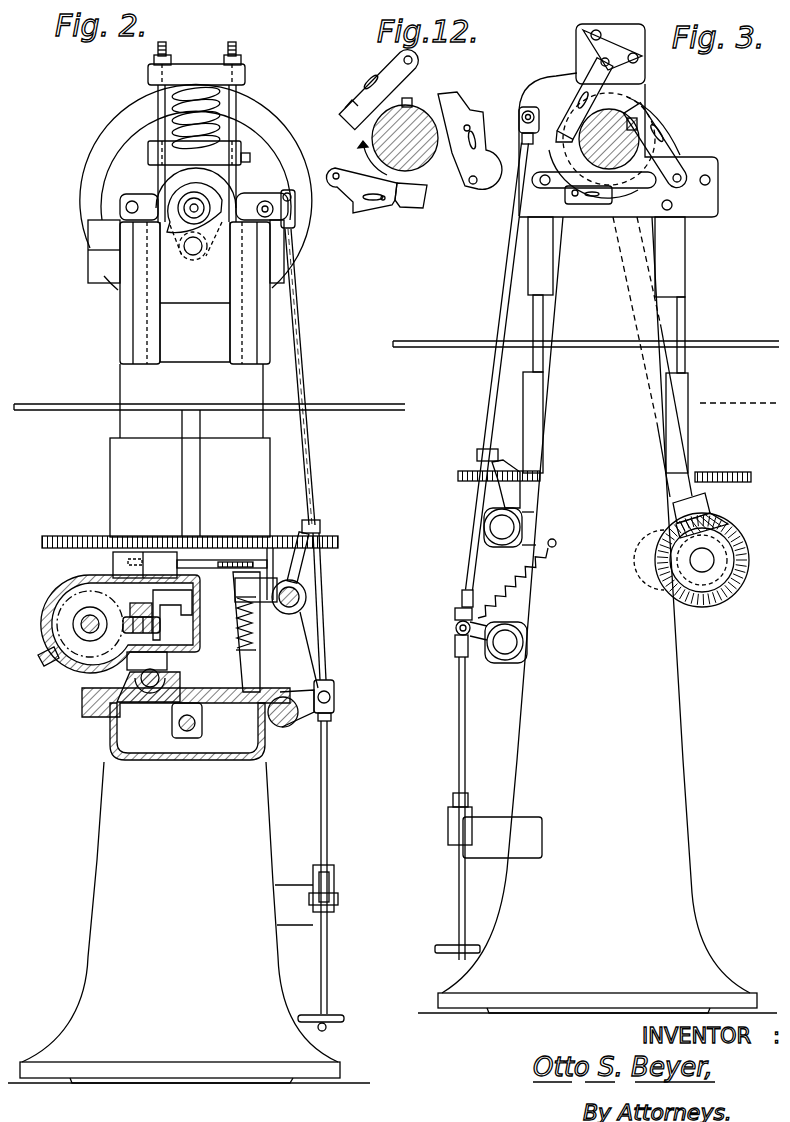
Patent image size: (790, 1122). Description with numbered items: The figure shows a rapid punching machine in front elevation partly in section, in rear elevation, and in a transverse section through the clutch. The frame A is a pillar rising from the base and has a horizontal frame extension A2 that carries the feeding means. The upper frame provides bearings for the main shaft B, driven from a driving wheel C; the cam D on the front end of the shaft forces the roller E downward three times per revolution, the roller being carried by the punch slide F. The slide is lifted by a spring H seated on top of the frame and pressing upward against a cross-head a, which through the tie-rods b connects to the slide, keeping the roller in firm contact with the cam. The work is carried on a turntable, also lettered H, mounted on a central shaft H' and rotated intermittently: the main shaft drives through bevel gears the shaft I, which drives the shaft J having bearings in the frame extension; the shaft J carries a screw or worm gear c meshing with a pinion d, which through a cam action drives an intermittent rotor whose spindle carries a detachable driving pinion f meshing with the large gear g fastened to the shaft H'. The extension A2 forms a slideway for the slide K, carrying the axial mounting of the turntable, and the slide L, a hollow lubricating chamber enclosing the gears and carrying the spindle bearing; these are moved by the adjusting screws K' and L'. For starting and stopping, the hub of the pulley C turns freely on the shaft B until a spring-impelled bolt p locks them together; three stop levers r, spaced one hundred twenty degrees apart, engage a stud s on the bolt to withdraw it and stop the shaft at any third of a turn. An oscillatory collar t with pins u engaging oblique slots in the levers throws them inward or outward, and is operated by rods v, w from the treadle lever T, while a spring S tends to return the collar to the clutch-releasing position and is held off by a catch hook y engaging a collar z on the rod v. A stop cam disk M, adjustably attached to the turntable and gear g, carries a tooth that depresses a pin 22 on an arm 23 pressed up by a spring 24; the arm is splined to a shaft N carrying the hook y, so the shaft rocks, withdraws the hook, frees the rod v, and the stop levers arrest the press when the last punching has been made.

In FIG. 2, the cross-head a is at (252, 70).
In FIG. 2, the tie-rods b is at (226, 48).
In FIG. 2, the driving wheel C is at (252, 118).
In FIG. 2, the spring and work carrier turntable H is at (209, 248).
In FIG. 3, the spring and work carrier turntable H is at (586, 332).
In FIG. 2, the cam D is at (190, 184).
In FIG. 2, the roller E is at (195, 293).
In FIG. 2, the punch slide F is at (195, 332).
In FIG. 2, the central shaft H' is at (207, 473).
In FIG. 2, the large gear g is at (63, 536).
In FIG. 3, the large gear g is at (737, 478).
In FIG. 2, the driving pinion f is at (153, 548).
In FIG. 2, the stop cam disk M is at (220, 562).
In FIG. 2, the shaft J is at (89, 622).
In FIG. 3, the shaft J is at (707, 566).
In FIG. 2, the pinion d is at (150, 625).
In FIG. 2, the screw gear c is at (72, 652).
In FIG. 2, the pin 22 is at (237, 574).
In FIG. 2, the arm 23 is at (253, 607).
In FIG. 2, the spring 24 is at (252, 633).
In FIG. 2, the shaft N is at (302, 602).
In FIG. 3, the shaft N is at (484, 524).
In FIG. 2, the slide L is at (169, 677).
In FIG. 2, the slide K is at (275, 632).
In FIG. 2, the adjusting screw L' is at (148, 704).
In FIG. 2, the adjusting screw K' is at (199, 721).
In FIG. 2, the frame extension A2 is at (110, 740).
In FIG. 2, the frame A is at (189, 922).
In FIG. 3, the frame A is at (597, 615).
In FIG. 2, the rod v is at (301, 458).
In FIG. 3, the rod v is at (490, 404).
In FIG. 2, the rod w is at (321, 808).
In FIG. 3, the rod w is at (465, 742).
In FIG. 2, the treadle lever T is at (321, 958).
In FIG. 3, the treadle lever T is at (454, 920).
In FIG. 12, the stop levers r is at (350, 104).
In FIG. 3, the stop levers r is at (577, 96).
In FIG. 12, the stud s is at (402, 101).
In FIG. 12, the main shaft B is at (420, 118).
In FIG. 3, the main shaft B is at (646, 104).
In FIG. 12, the pins u is at (466, 132).
In FIG. 3, the pins u is at (676, 148).
In FIG. 3, the bolt p is at (657, 120).
In FIG. 3, the oscillatory collar t is at (536, 100).
In FIG. 3, the collar z is at (478, 452).
In FIG. 3, the catch hook y is at (506, 462).
In FIG. 3, the spring S is at (535, 572).
In FIG. 3, the shaft I is at (683, 456).